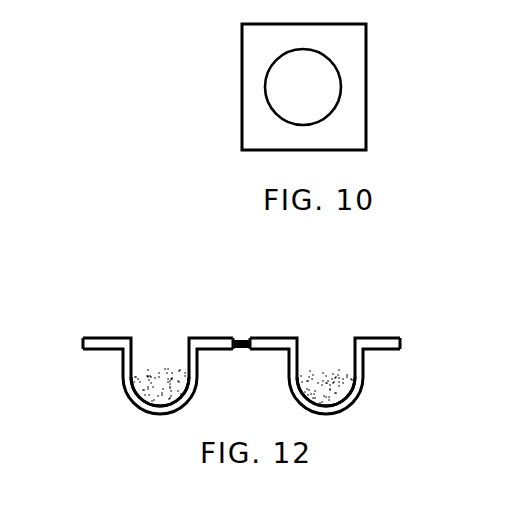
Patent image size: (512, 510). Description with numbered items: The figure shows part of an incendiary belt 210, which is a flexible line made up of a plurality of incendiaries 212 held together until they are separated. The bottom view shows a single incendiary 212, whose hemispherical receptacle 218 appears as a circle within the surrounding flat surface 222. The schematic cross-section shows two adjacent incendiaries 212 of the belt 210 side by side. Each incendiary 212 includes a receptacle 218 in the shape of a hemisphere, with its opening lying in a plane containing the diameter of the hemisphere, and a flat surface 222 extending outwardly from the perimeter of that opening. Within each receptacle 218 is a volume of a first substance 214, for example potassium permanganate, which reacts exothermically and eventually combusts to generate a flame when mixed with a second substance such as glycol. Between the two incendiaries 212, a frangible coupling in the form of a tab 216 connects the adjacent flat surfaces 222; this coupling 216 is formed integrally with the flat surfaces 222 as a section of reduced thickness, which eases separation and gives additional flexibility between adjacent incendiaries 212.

In FIG. 12, the incendiary belt 210 is at (258, 333).
In FIG. 10, the incendiary 212 is at (313, 87).
In FIG. 12, the incendiary 212 is at (258, 353).
In FIG. 12, the first substance 214 is at (157, 411).
In FIG. 12, the tab 216 is at (240, 349).
In FIG. 10, the receptacle 218 is at (275, 77).
In FIG. 12, the receptacle 218 is at (124, 382).
In FIG. 10, the flat surface 222 is at (250, 130).
In FIG. 12, the flat surface 222 is at (100, 338).